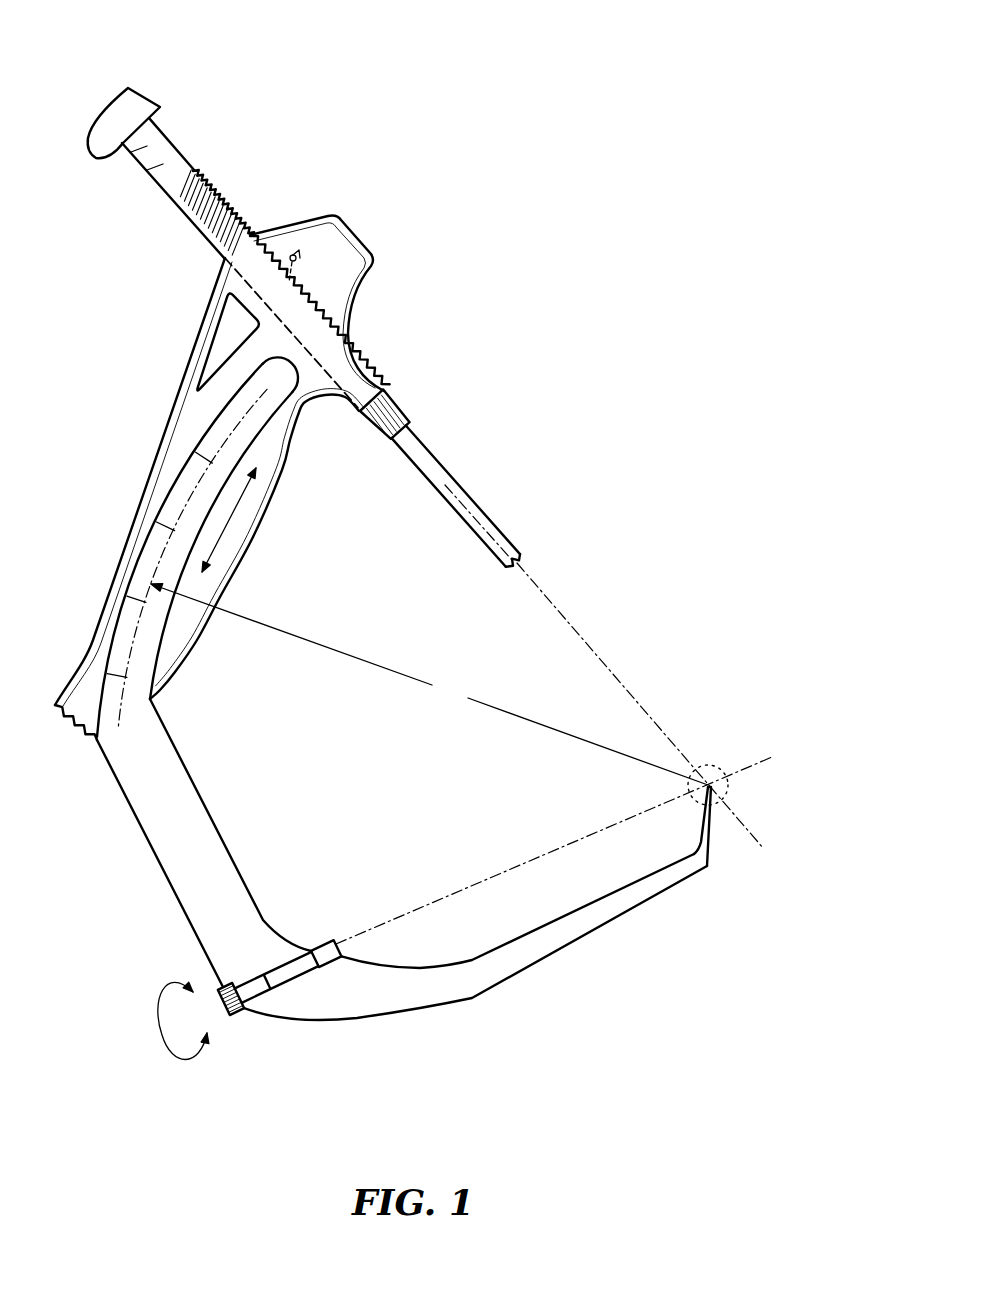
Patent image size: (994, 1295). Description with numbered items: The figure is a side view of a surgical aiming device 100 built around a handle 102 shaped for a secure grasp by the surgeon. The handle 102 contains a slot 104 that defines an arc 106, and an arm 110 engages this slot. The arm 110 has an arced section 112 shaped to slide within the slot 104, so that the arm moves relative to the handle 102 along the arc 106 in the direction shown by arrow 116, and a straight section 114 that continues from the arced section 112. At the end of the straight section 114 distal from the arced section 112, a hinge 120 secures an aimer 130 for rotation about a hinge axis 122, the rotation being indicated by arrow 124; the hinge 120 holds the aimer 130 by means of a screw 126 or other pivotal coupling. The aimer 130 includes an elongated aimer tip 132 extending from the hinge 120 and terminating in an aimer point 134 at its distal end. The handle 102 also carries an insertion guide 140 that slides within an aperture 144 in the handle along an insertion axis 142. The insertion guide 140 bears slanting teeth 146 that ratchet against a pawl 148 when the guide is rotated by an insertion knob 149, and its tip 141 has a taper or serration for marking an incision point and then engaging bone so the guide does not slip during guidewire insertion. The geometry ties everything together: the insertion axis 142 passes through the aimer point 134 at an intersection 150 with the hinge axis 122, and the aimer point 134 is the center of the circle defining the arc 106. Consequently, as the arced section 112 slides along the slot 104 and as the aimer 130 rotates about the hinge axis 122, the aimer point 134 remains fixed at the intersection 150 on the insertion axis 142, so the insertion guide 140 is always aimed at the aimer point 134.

The surgical aiming device 100 is at (569, 483).
The handle 102 is at (174, 398).
The slot 104 is at (289, 366).
The arc 106 is at (357, 437).
The arm 110 is at (94, 740).
The arced section 112 is at (170, 470).
The straight section 114 is at (150, 860).
The arrow 116 is at (235, 507).
The hinge 120 is at (327, 942).
The hinge axis 122 is at (571, 842).
The arrow 124 is at (168, 1030).
The screw 126 is at (240, 1012).
The aimer 130 is at (552, 955).
The aimer tip 132 is at (428, 988).
The aimer point 134 is at (716, 786).
The insertion guide 140 is at (440, 458).
The tip 141 is at (525, 562).
The insertion axis 142 is at (575, 625).
The aperture 144 is at (302, 320).
The slanting teeth 146 is at (207, 157).
The pawl 148 is at (302, 254).
The insertion knob 149 is at (131, 86).
The intersection 150 is at (711, 767).